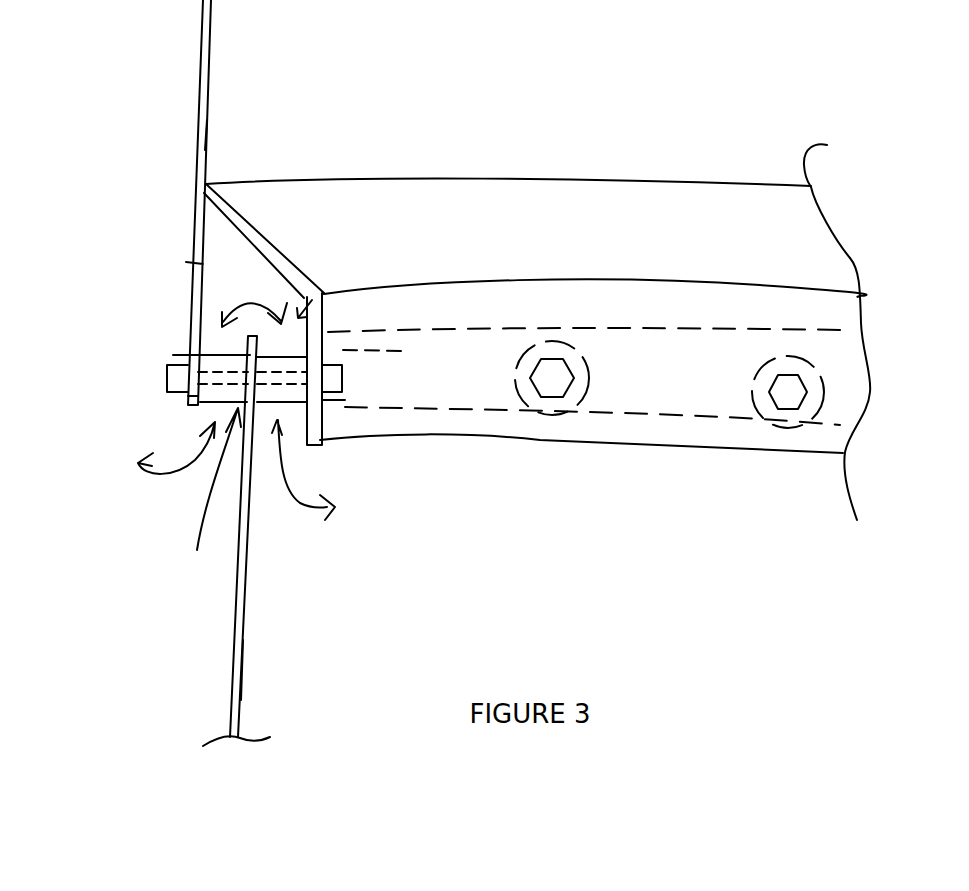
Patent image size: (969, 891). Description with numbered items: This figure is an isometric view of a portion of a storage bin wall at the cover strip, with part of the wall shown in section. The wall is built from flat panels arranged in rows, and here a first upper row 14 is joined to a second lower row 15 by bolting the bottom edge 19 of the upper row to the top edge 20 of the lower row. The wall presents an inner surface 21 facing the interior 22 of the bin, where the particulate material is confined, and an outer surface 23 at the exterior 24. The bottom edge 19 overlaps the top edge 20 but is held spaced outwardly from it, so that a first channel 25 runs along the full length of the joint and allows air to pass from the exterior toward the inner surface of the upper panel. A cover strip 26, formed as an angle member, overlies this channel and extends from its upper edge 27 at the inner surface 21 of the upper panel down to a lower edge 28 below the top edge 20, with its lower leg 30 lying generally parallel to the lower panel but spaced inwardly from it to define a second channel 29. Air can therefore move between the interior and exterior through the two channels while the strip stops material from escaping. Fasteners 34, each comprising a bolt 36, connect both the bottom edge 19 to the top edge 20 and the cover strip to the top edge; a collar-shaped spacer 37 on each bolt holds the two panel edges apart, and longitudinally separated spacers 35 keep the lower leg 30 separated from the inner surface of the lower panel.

The first upper row 14 is at (211, 62).
The second lower row 15 is at (245, 610).
The bottom edge 19 is at (197, 402).
The top edge 20 is at (307, 336).
The inner surface 21 is at (210, 133).
The interior 22 is at (197, 113).
The outer surface 23 is at (320, 210).
The exterior 24 is at (79, 129).
The first channel 25 is at (212, 495).
The cover strip 26 is at (455, 222).
The upper edge 27 is at (303, 181).
The lower edge 28 is at (577, 440).
The second channel 29 is at (320, 294).
The lower leg 30 is at (310, 422).
The fastener 34 is at (625, 357).
The spacer 35 is at (323, 396).
The bolt 36 is at (137, 462).
The spacer 37 is at (207, 356).